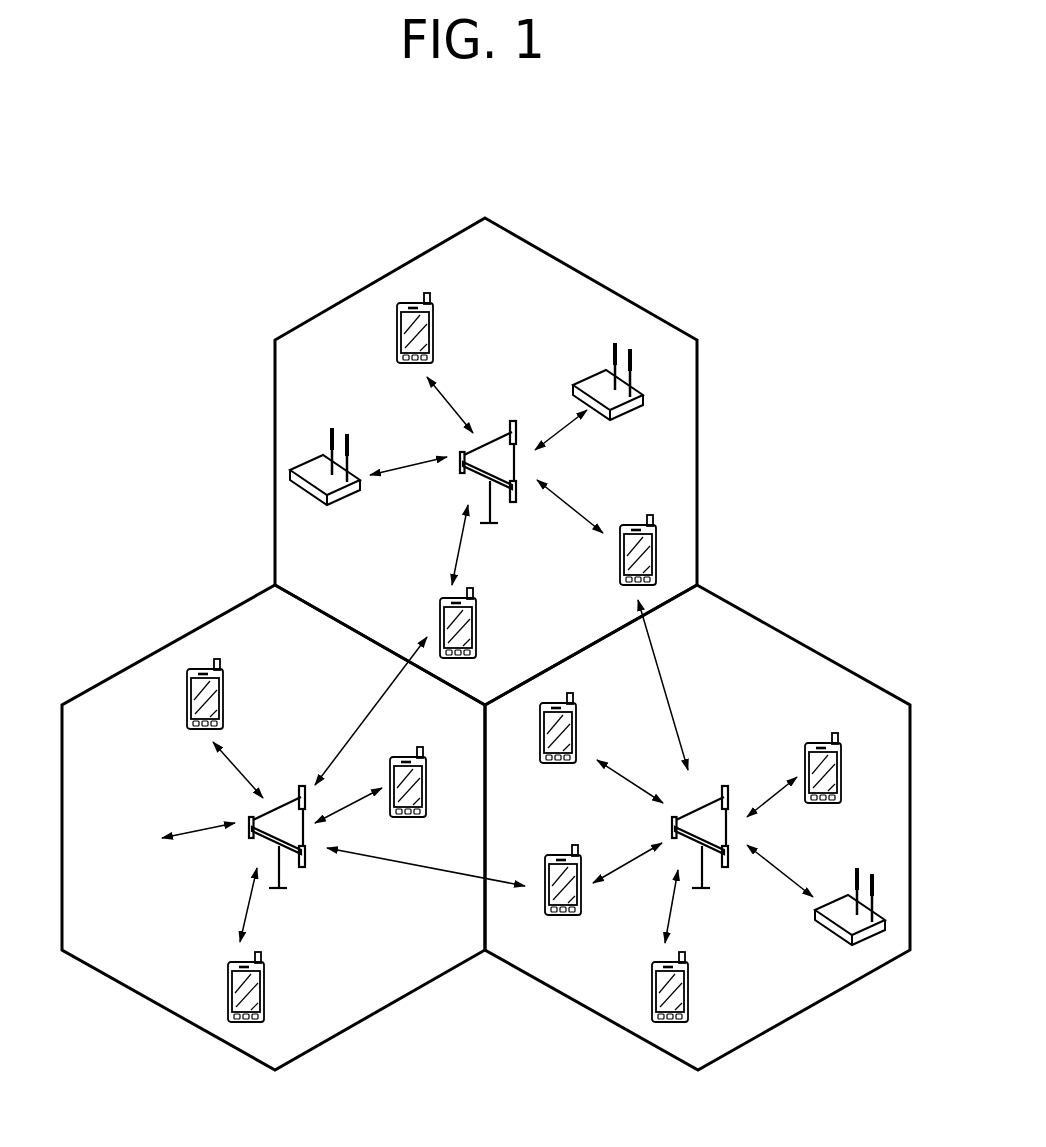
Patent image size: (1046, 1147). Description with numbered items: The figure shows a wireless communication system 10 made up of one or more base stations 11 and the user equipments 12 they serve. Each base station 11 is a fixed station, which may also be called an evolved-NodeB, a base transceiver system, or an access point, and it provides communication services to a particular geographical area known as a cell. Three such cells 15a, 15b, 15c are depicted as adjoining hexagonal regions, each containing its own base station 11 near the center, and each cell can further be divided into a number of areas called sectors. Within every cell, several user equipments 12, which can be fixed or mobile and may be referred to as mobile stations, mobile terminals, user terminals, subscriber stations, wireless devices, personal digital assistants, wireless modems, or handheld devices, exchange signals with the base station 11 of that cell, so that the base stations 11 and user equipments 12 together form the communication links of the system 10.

The wireless communication system 10 is at (795, 343).
The base station 11 is at (500, 437).
The user equipment 12 is at (433, 330).
The cell 15a is at (697, 447).
The cell 15b is at (834, 658).
The cell 15c is at (137, 660).